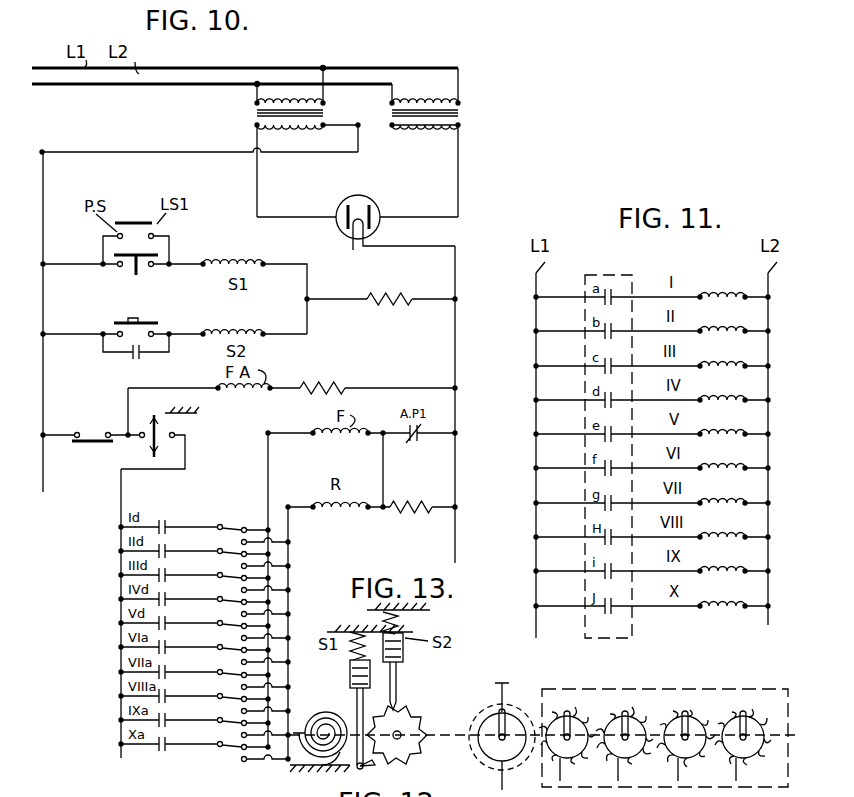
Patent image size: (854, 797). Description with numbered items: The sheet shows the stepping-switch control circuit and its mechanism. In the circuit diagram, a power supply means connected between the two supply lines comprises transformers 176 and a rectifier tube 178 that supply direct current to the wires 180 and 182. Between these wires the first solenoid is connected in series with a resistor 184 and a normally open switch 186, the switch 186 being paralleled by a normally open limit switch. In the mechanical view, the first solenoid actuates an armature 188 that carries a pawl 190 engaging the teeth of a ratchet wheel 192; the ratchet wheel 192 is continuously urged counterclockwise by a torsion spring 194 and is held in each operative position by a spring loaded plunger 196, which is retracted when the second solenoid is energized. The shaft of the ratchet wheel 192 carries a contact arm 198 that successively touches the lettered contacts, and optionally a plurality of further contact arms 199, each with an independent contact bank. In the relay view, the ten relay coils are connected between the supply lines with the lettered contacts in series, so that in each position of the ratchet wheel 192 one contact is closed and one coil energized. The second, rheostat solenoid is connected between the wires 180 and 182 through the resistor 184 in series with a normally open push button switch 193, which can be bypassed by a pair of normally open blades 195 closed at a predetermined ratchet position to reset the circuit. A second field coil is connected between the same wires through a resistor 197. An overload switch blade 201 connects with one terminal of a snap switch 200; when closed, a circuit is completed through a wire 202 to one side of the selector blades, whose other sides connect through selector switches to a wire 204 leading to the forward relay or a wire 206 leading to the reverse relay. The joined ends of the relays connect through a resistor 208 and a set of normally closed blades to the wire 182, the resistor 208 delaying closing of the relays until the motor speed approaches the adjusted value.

In FIG. 10, the transformers 176 is at (460, 103).
In FIG. 10, the rectifier tube 178 is at (376, 203).
In FIG. 10, the wire 180 is at (43, 237).
In FIG. 10, the wire 182 is at (457, 258).
In FIG. 10, the resistor 184 is at (405, 300).
In FIG. 10, the switch 186 is at (146, 250).
In FIG. 10, the push button switch 193 is at (127, 323).
In FIG. 10, the blades 195 is at (133, 358).
In FIG. 10, the resistor 197 is at (334, 386).
In FIG. 10, the snap switch 200 is at (172, 428).
In FIG. 10, the overload switch blade 201 is at (91, 433).
In FIG. 10, the wire 202 is at (122, 500).
In FIG. 10, the wire 204 is at (268, 497).
In FIG. 10, the wire 206 is at (290, 558).
In FIG. 10, the resistor 208 is at (408, 506).
In FIG. 13, the armature 188 is at (352, 688).
In FIG. 13, the pawl 190 is at (372, 764).
In FIG. 13, the ratchet wheel 192 is at (415, 718).
In FIG. 13, the torsion spring 194 is at (300, 755).
In FIG. 13, the spring loaded plunger 196 is at (400, 682).
In FIG. 13, the contact arm 198 is at (496, 712).
In FIG. 13, the contact arms 199 is at (732, 682).